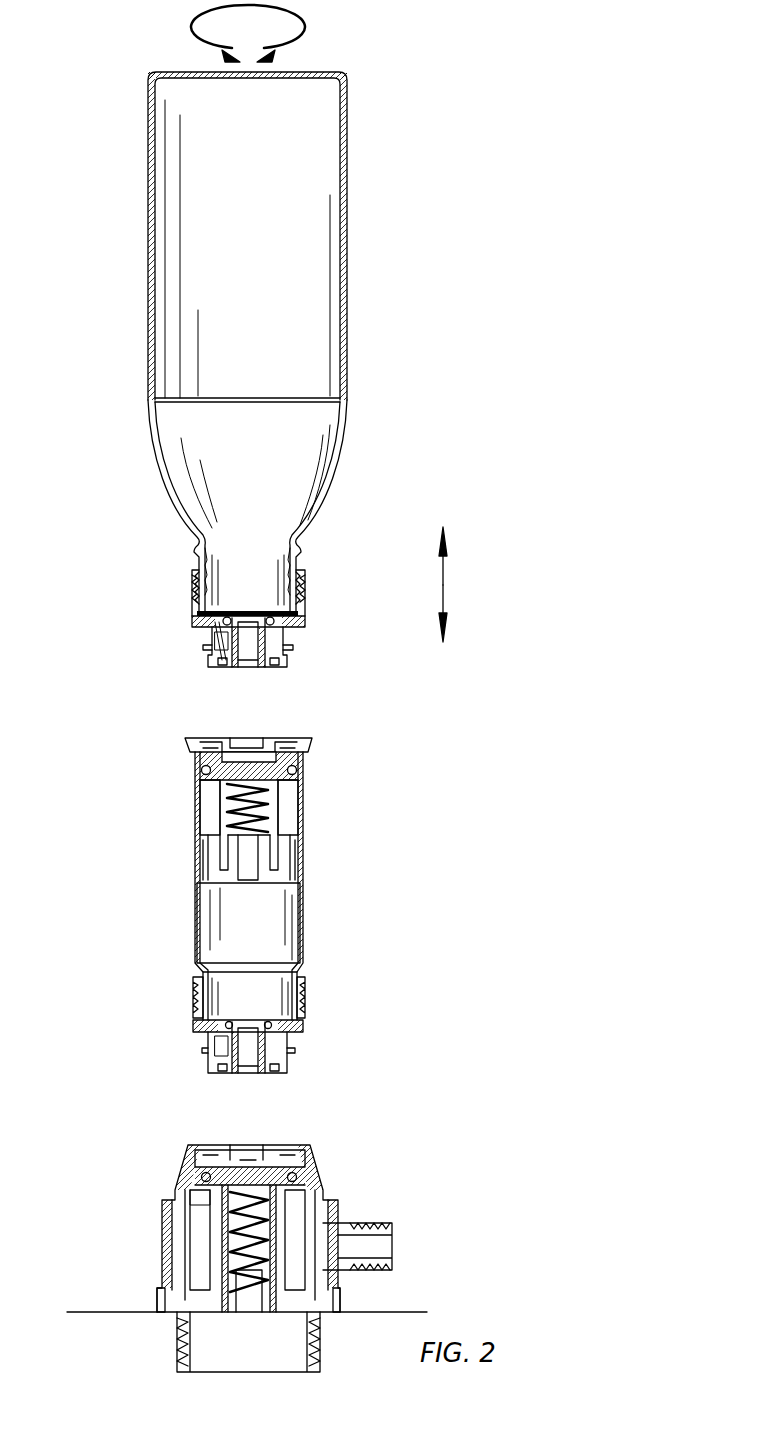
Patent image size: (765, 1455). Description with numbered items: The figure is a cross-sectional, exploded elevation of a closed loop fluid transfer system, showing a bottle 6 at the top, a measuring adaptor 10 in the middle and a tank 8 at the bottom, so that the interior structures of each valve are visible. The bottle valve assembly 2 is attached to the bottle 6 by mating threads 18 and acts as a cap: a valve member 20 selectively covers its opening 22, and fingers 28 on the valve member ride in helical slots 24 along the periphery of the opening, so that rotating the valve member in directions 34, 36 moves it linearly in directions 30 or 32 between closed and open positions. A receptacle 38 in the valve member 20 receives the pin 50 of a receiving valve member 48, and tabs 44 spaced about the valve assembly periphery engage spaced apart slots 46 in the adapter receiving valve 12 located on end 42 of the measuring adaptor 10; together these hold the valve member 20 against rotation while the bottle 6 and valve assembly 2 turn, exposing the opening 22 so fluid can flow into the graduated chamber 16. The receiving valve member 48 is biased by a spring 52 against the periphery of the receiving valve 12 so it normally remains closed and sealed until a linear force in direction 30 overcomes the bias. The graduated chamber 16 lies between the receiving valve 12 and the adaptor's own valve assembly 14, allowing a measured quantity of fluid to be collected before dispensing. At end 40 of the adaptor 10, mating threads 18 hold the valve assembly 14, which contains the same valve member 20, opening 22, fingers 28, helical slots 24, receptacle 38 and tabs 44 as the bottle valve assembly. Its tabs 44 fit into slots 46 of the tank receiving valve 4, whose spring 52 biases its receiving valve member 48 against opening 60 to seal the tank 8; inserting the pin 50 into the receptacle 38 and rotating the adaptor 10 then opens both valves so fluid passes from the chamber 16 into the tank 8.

The bottle valve assembly 2 is at (305, 612).
The tank receiving valve 4 is at (310, 1158).
The bottle 6 is at (376, 378).
The tank 8 is at (406, 1318).
The measuring adaptor 10 is at (371, 866).
The adapter receiving valve 12 is at (312, 745).
The valve assembly 14 is at (303, 1015).
The graduated chamber 16 is at (196, 912).
The mating threads 18 is at (305, 585).
The valve member 20 is at (280, 668).
The opening 22 is at (226, 650).
The helical slots 24 is at (215, 640).
The fingers 28 is at (270, 618).
The direction 30 is at (446, 620).
The direction 32 is at (446, 553).
The direction 34 is at (262, 60).
The direction 36 is at (234, 60).
The receptacle 38 is at (248, 668).
The end 40 is at (309, 969).
The end 42 is at (308, 786).
The tabs 44 is at (203, 647).
The slots 46 is at (290, 745).
The receiving valve member 48 is at (213, 745).
The pin 50 is at (228, 782).
The spring 52 is at (232, 812).
The opening 60 is at (200, 1192).